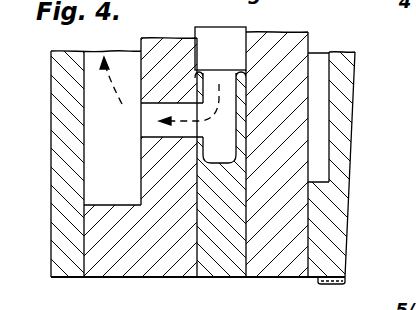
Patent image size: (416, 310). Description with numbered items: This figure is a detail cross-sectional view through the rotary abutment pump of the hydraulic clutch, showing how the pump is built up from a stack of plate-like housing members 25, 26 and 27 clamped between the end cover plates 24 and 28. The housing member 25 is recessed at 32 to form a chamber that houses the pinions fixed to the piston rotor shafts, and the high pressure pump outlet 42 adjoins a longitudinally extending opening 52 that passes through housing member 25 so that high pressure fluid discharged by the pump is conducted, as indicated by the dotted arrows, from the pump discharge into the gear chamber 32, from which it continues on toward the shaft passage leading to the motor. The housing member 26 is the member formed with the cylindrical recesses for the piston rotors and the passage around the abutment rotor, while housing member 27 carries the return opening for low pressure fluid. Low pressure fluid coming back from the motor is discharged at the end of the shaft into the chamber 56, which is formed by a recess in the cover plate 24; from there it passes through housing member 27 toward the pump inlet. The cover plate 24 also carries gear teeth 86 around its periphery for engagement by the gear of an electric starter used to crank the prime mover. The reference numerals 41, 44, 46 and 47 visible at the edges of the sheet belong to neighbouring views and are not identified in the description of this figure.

The cover plate 24 is at (343, 82).
The housing member 25 is at (135, 265).
The housing member 26 is at (218, 264).
The housing member 27 is at (267, 265).
The end cover plate 28 is at (67, 225).
The gear chamber recess 32 is at (98, 170).
The high pressure pump outlet 42 is at (220, 80).
The longitudinally extending opening 52 is at (150, 116).
The chamber 56 is at (318, 142).
The gear teeth 86 is at (322, 284).
The numeral from adjacent figure 41 is at (315, 155).
The numeral from adjacent figure 44 is at (371, 157).
The numeral from adjacent figure 46 is at (341, 7).
The numeral from adjacent figure 47 is at (349, 300).